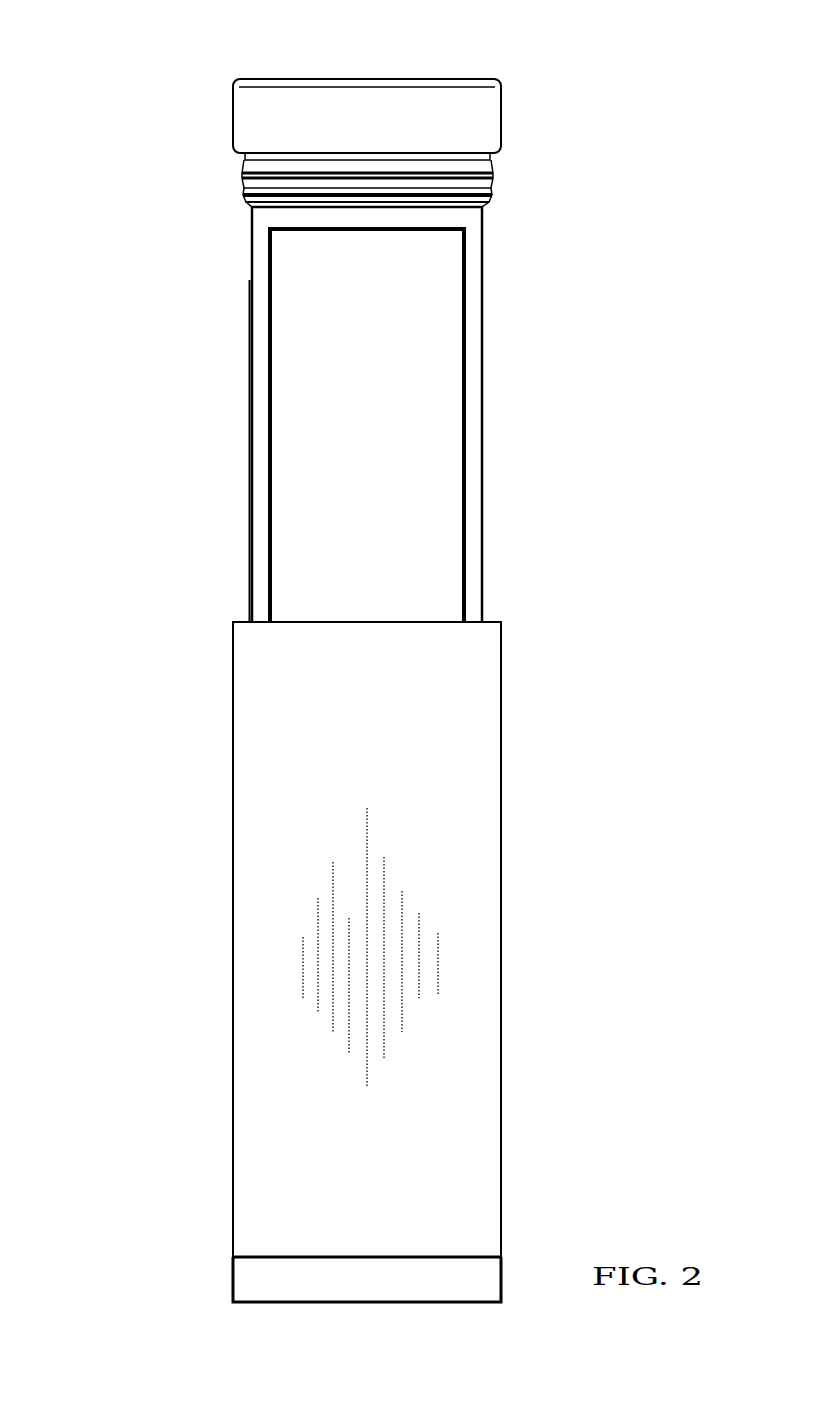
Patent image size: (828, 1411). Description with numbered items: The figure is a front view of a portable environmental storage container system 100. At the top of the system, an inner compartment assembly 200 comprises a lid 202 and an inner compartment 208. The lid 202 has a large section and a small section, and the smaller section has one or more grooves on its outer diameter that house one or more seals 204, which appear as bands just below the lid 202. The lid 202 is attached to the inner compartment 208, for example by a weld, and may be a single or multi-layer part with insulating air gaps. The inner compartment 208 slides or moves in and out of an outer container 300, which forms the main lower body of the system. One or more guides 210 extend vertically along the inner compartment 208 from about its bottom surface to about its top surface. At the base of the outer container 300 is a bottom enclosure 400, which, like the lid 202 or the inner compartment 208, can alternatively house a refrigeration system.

The portable environmental storage container system 100 is at (530, 121).
The inner compartment assembly 200 is at (494, 539).
The lid 202 is at (362, 113).
The seals 204 is at (245, 182).
The inner compartment 208 is at (432, 393).
The guides 210 is at (248, 391).
The outer container 300 is at (515, 868).
The bottom enclosure 400 is at (222, 1273).